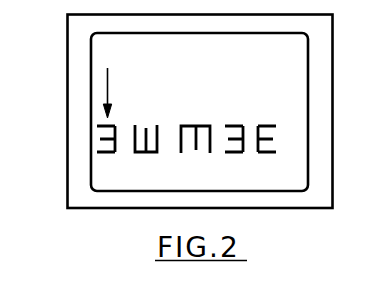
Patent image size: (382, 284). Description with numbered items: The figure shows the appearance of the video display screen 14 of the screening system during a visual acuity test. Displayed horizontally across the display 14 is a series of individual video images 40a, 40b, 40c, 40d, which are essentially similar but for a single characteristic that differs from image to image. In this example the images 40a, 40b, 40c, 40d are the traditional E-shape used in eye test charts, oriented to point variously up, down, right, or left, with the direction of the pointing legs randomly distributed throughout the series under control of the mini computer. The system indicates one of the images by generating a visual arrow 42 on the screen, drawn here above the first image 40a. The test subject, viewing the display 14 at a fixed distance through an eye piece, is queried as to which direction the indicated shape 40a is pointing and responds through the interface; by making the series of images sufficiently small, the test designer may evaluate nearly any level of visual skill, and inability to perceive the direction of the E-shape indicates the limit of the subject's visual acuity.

The video display screen 14 is at (67, 96).
The visual arrow 42 is at (108, 86).
The video image 40a is at (118, 126).
The video image 40b is at (158, 127).
The video image 40c is at (180, 125).
The test character (tumbling E, fourth) 40d is at (238, 124).